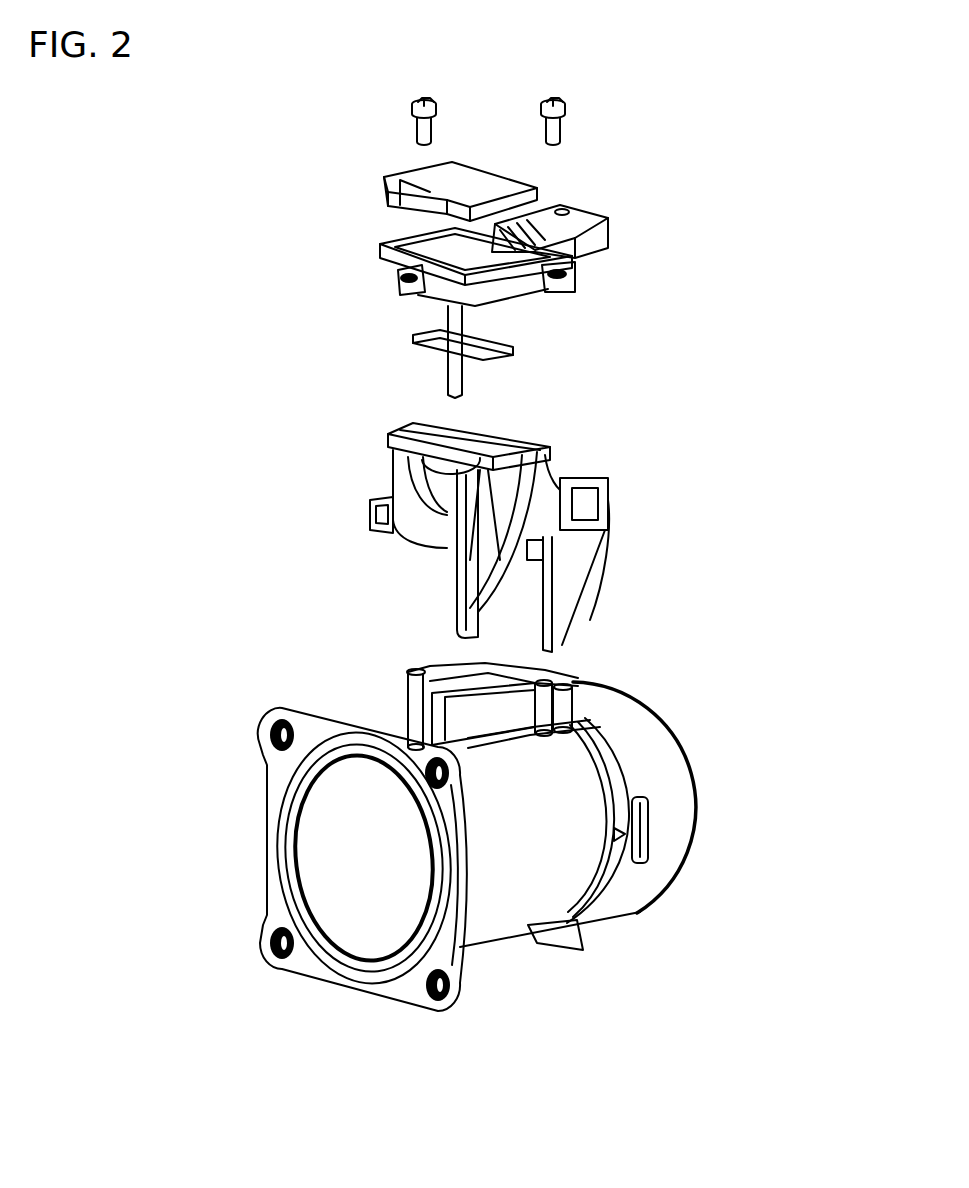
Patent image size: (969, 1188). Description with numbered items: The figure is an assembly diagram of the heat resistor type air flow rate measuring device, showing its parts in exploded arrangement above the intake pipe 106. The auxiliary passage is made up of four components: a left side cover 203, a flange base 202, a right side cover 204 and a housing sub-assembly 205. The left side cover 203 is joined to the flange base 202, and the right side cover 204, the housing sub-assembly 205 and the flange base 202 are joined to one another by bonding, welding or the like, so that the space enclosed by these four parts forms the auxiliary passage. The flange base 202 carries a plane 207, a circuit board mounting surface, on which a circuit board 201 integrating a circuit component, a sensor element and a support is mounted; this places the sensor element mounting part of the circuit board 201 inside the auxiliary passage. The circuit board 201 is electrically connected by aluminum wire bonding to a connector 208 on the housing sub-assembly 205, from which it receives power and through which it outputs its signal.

The intake pipe 106 is at (667, 803).
The circuit board 201 is at (513, 345).
The flange base 202 is at (542, 452).
The left side cover 203 is at (383, 495).
The right side cover 204 is at (603, 540).
The housing sub-assembly 205 is at (455, 603).
The plane (circuit board mounting surface) 207 is at (437, 427).
The connector 208 is at (610, 228).